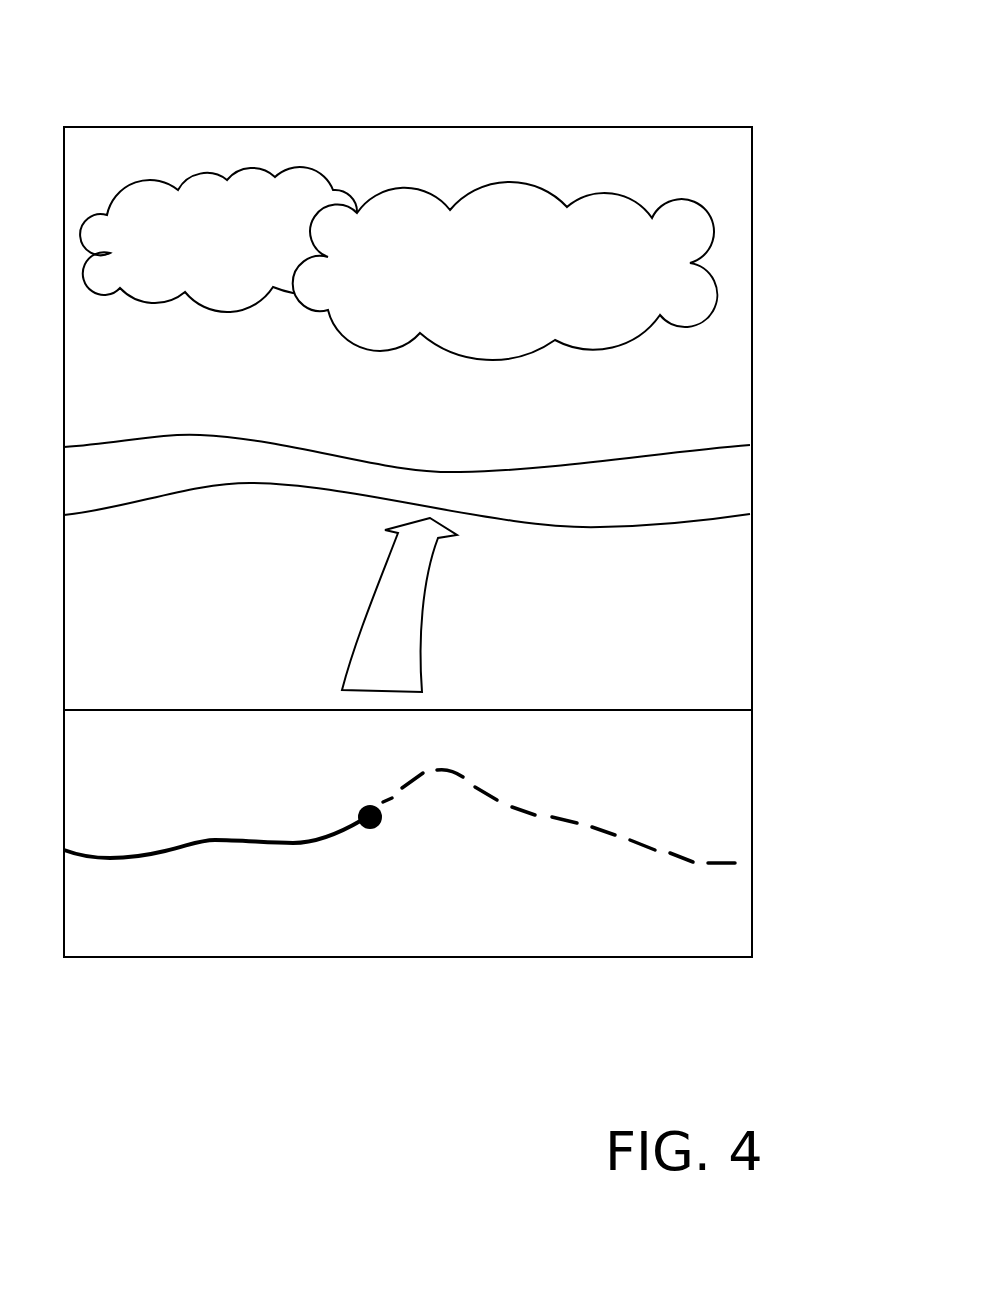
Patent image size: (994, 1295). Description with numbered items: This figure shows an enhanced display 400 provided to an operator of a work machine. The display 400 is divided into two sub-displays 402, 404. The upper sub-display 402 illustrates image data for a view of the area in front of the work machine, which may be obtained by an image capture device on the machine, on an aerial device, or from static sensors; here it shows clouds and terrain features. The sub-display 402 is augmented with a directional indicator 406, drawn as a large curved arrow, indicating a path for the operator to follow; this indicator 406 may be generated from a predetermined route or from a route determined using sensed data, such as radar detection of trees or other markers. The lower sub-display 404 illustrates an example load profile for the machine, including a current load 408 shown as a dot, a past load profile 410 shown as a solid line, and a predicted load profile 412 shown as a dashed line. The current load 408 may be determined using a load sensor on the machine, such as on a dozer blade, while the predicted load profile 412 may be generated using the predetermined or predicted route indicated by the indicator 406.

The display 400 is at (627, 40).
The sub-display 402 is at (717, 389).
The sub-display 404 is at (724, 811).
The directional indicator 406 is at (423, 635).
The current load 408 is at (367, 805).
The past load profile 410 is at (138, 857).
The predicted load profile 412 is at (490, 793).